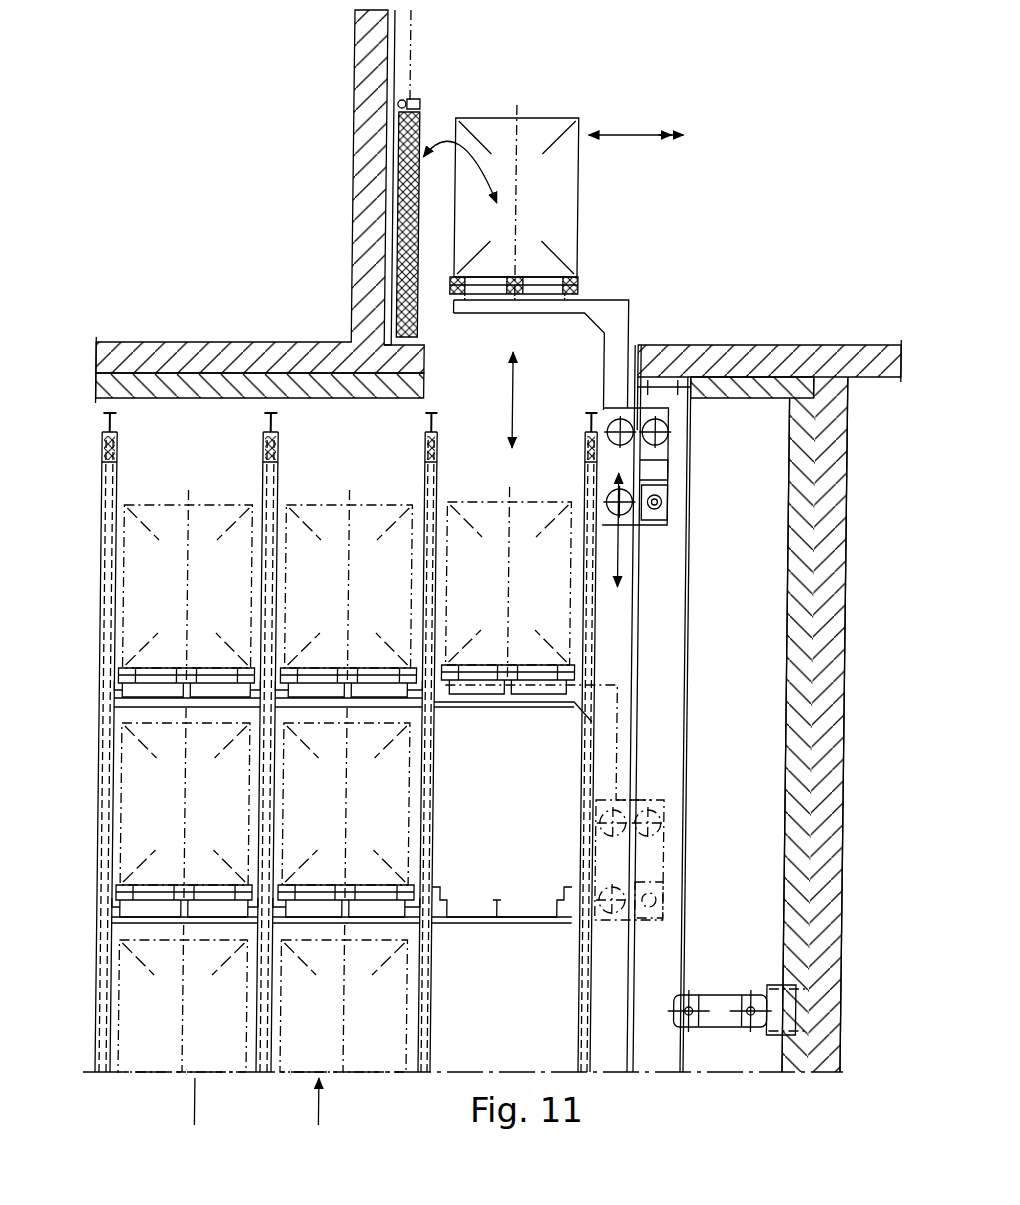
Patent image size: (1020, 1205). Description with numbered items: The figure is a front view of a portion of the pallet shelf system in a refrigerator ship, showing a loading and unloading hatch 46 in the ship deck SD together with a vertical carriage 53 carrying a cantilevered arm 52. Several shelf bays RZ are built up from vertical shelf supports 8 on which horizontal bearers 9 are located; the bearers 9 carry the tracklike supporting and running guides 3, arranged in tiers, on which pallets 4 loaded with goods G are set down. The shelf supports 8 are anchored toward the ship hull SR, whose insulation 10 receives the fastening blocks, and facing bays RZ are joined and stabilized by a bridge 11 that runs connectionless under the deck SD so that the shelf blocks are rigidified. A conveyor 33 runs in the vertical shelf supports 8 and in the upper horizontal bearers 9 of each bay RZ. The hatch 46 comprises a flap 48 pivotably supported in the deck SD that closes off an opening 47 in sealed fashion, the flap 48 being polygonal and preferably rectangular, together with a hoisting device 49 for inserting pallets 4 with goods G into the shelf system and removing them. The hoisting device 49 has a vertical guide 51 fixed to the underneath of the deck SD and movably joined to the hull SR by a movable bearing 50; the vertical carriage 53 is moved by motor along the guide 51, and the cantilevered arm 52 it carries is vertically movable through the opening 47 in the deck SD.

The supporting and running guide 3 is at (122, 688).
The pallet 4 is at (515, 278).
The vertical shelf support 8 is at (583, 1027).
The horizontal bearer 9 is at (102, 448).
The insulation 10 is at (117, 388).
The bridge 11 is at (112, 428).
The conveyor 33 is at (106, 1050).
The loading and unloading hatch 46 is at (594, 357).
The opening 47 is at (471, 360).
The flap 48 is at (402, 186).
The hoisting device 49 is at (691, 417).
The movable bearing 50 is at (731, 1008).
The vertical guide 51 is at (658, 648).
The cantilevered arm 52 is at (601, 312).
The vertical carriage 53 is at (625, 462).
The goods G is at (552, 185).
The ship deck SD is at (196, 356).
The ship hull SR is at (832, 480).
The shelf bay RZ is at (506, 831).